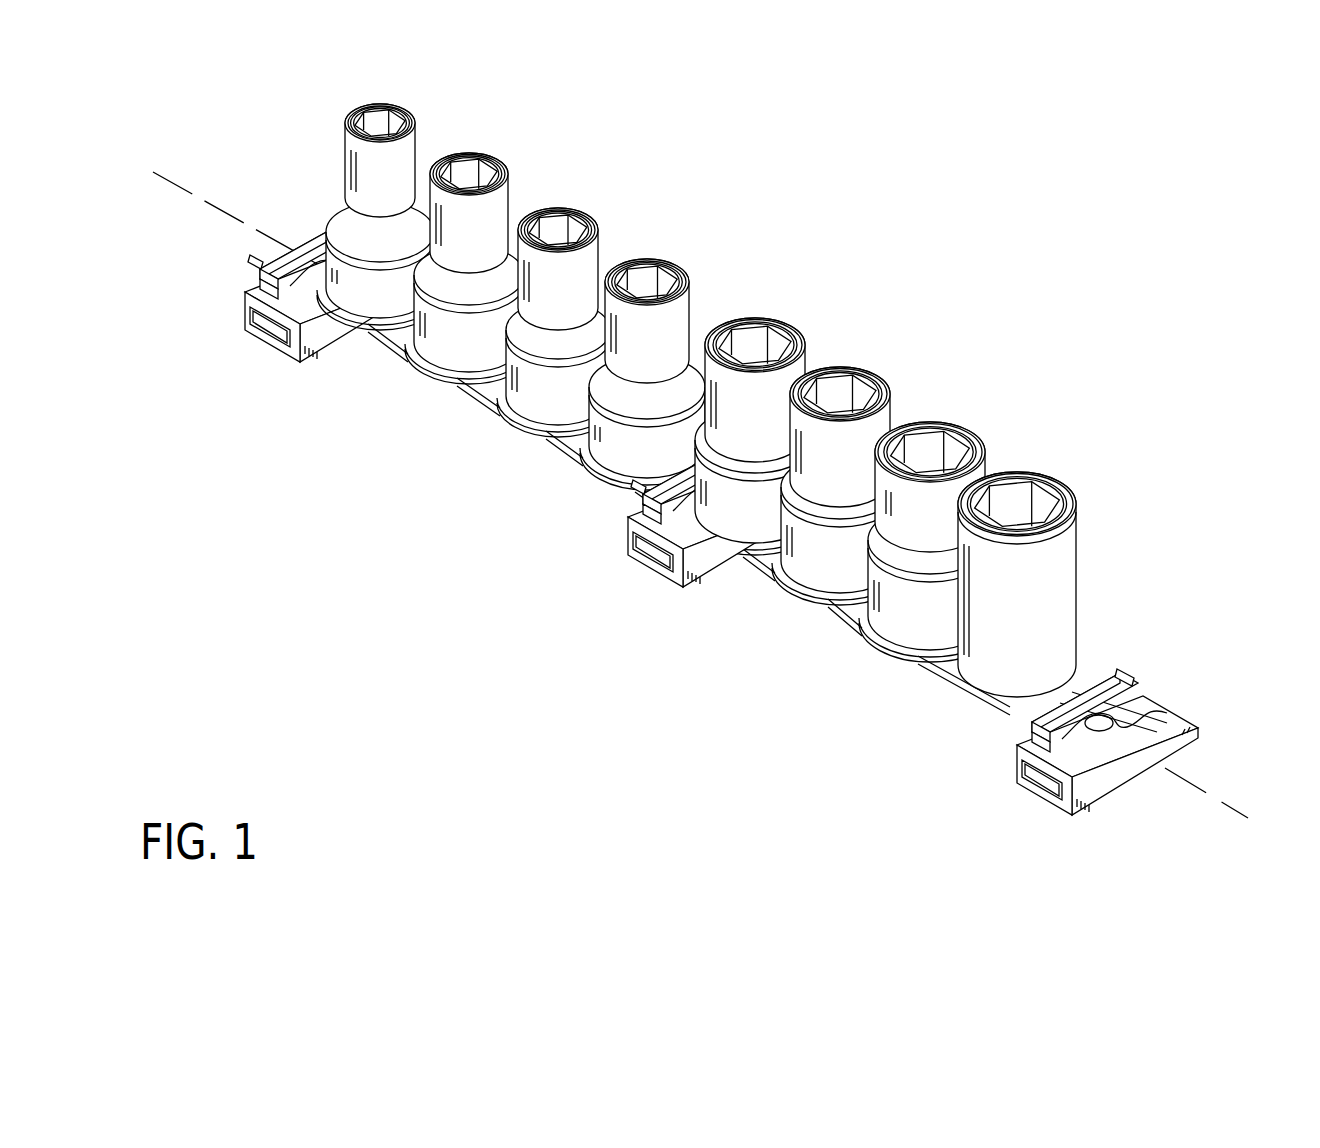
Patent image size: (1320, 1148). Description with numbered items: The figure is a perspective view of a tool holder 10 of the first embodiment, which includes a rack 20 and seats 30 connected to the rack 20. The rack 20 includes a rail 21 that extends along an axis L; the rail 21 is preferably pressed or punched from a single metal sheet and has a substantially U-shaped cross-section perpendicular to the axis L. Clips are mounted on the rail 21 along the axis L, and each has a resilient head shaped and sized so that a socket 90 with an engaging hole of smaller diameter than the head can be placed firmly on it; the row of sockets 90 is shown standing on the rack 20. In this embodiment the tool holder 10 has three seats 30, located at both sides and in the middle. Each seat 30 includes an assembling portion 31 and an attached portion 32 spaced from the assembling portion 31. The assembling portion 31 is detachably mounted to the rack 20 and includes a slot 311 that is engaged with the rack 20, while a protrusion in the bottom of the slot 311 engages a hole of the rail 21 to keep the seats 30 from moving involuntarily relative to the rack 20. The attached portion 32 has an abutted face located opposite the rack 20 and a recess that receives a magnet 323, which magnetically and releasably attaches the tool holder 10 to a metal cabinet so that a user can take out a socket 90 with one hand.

The tool holder 10 is at (758, 748).
The rack 20 is at (840, 645).
The rail 21 is at (925, 685).
The seat 30 is at (1160, 650).
The assembling portion 31 is at (1136, 656).
The slot 311 is at (1174, 671).
The attached portion 32 is at (1099, 788).
The magnet 323 is at (1031, 822).
The socket 90 is at (953, 448).
The axis L is at (1230, 800).